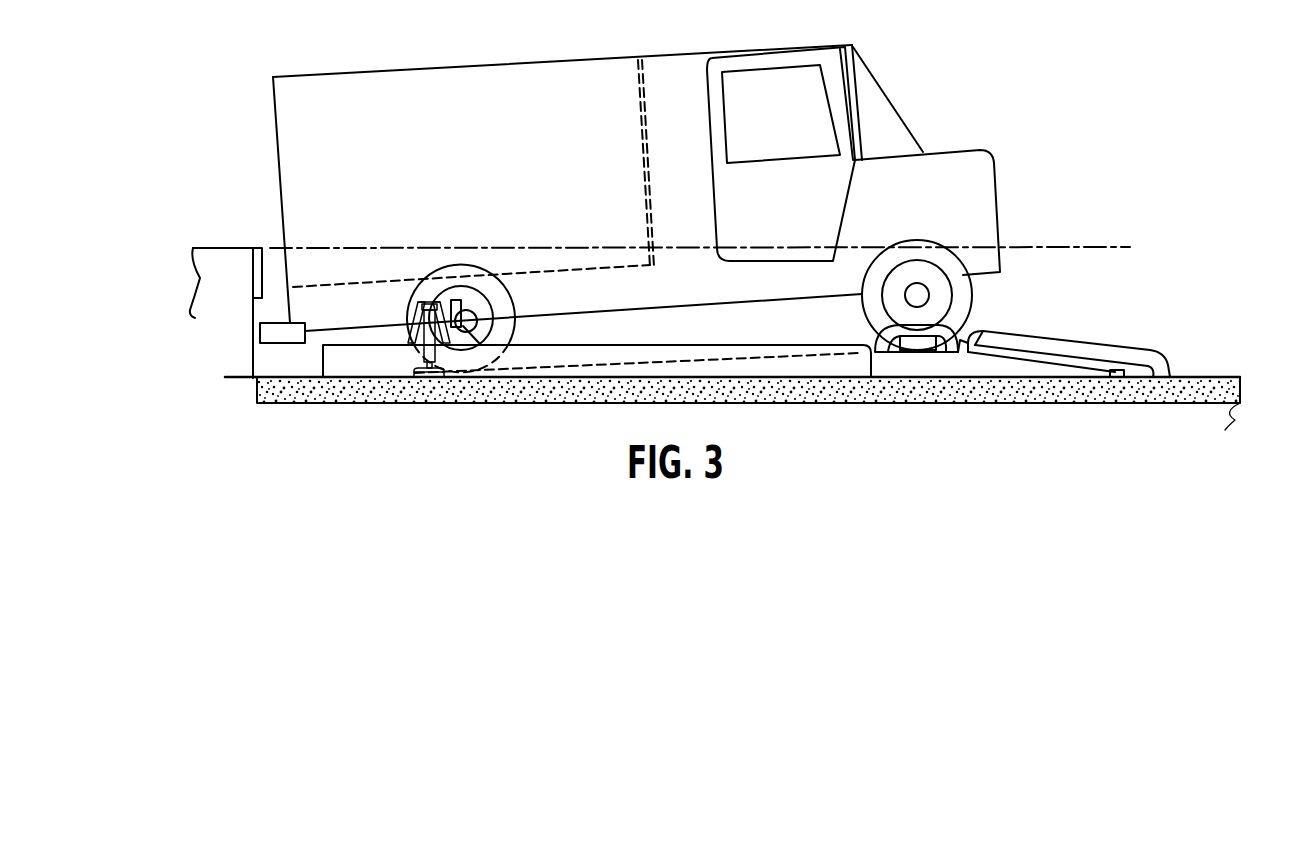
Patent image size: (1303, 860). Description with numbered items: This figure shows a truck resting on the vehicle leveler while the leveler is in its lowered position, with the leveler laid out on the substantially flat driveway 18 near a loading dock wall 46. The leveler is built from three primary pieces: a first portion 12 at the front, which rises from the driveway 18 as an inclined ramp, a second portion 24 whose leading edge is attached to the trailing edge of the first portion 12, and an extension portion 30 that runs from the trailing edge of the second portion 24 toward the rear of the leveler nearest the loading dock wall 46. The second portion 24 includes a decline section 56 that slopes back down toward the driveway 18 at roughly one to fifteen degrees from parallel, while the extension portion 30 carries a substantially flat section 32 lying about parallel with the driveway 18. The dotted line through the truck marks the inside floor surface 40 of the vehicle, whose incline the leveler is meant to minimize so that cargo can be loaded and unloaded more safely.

The loading dock wall 46 is at (218, 280).
The inside floor surface 40 is at (325, 287).
The driveway 18 is at (1055, 385).
The second portion 24 is at (722, 362).
The flat section 32 is at (352, 378).
The decline section 56 is at (628, 366).
The extension portion 30 is at (407, 378).
The first portion 12 is at (984, 362).